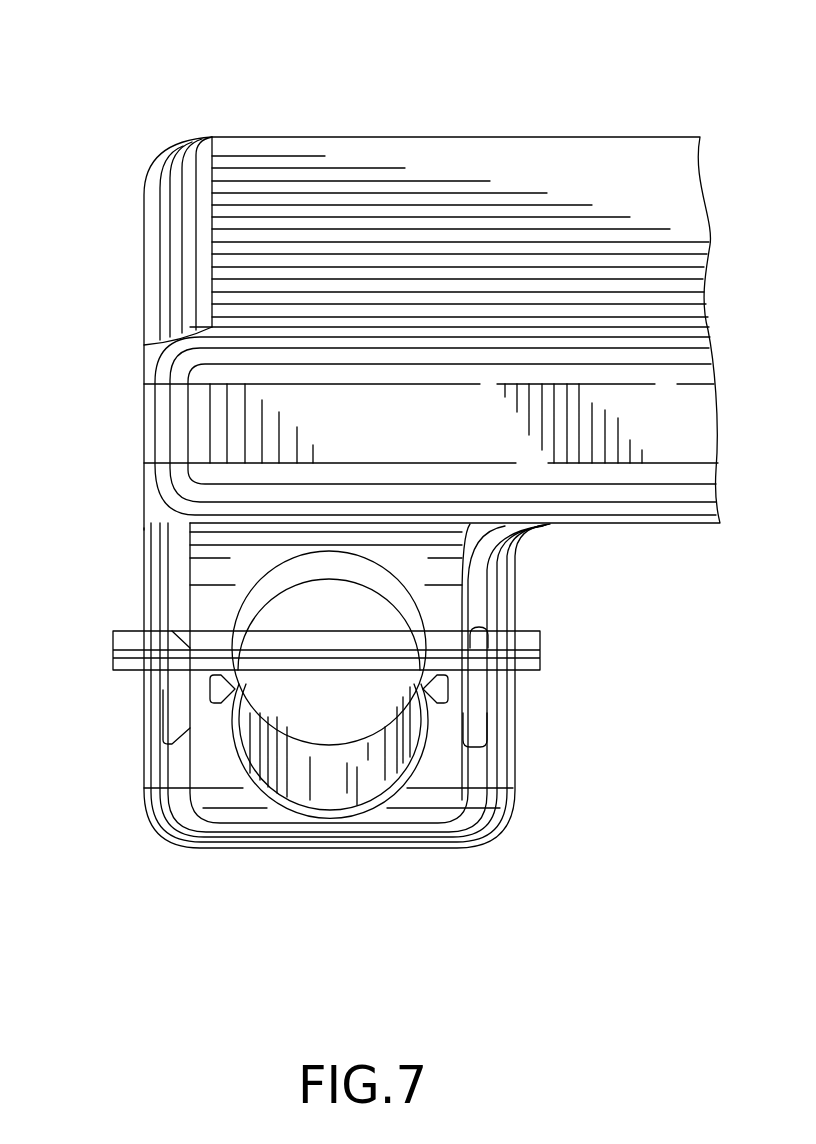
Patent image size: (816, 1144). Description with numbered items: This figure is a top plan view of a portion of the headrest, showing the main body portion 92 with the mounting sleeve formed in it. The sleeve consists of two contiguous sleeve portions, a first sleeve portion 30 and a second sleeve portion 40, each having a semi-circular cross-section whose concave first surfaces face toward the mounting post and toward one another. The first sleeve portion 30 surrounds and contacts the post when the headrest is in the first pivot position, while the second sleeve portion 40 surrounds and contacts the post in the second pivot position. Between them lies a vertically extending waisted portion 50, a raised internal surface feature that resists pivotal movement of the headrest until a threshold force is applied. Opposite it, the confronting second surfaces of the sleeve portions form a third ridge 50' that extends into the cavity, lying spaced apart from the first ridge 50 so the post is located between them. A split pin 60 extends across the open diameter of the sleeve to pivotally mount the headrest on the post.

The main body portion 92 is at (560, 167).
The first sleeve portion 30 is at (278, 578).
The second sleeve portion 40 is at (302, 803).
The waisted portion 50 is at (503, 717).
The third ridge 50' is at (138, 724).
The split pin 60 is at (530, 643).